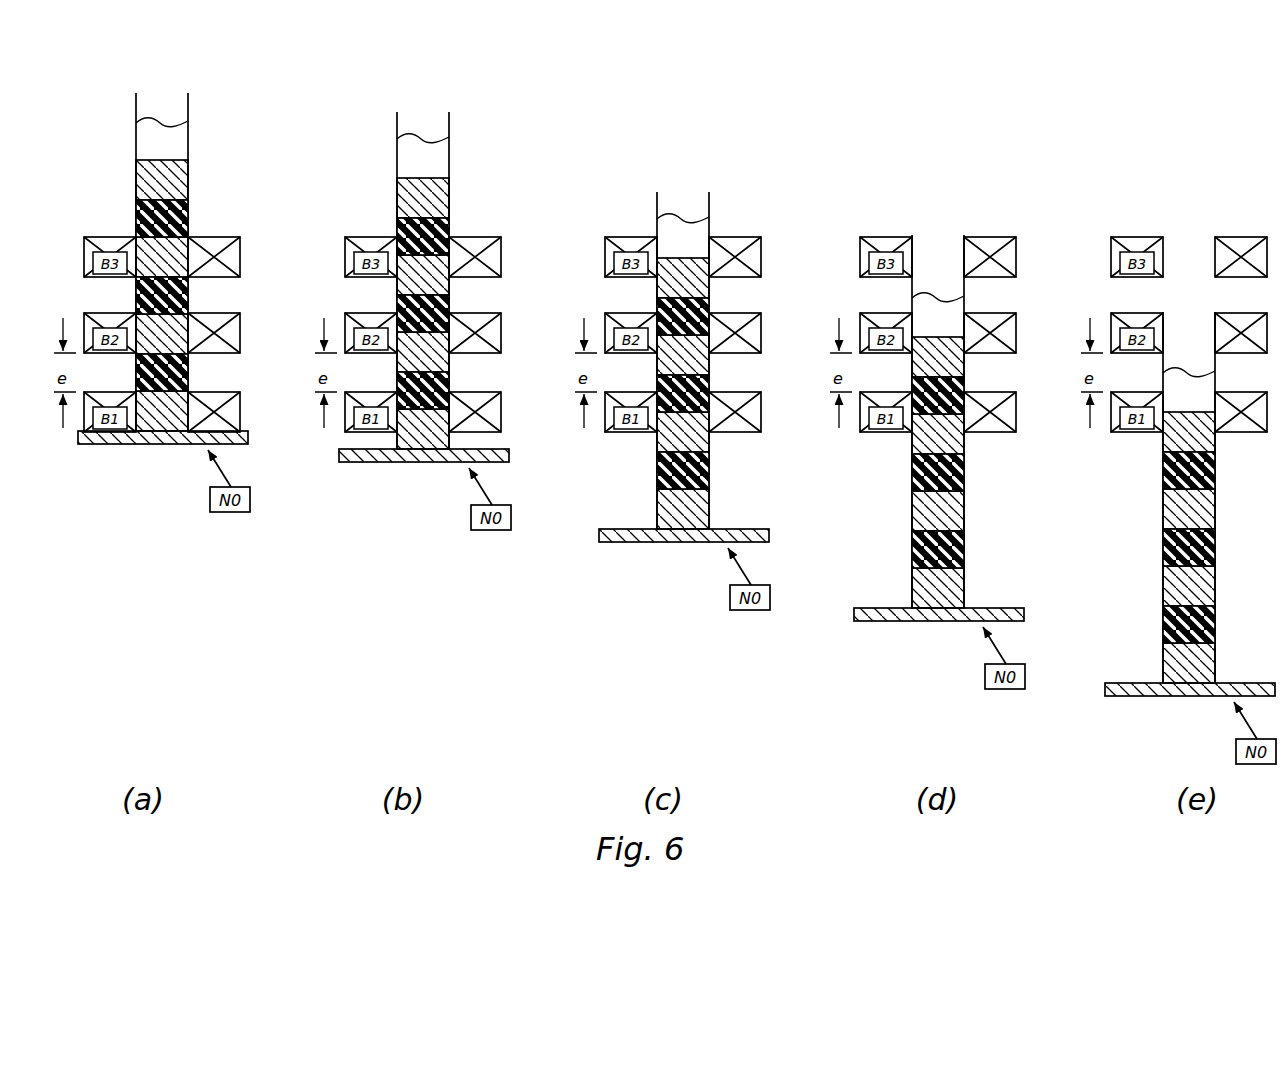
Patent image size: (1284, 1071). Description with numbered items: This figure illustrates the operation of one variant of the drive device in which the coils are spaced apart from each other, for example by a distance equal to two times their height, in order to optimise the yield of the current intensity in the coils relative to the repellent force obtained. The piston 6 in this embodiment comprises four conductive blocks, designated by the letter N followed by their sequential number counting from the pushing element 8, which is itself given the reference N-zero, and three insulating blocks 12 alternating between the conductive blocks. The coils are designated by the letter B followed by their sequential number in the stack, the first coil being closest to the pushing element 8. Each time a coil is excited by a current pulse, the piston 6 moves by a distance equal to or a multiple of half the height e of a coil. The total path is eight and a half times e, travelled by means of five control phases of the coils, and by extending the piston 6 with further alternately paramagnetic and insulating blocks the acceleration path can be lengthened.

The piston 6 is at (163, 113).
The insulating block 12 is at (183, 210).
The pushing element 8 is at (131, 445).